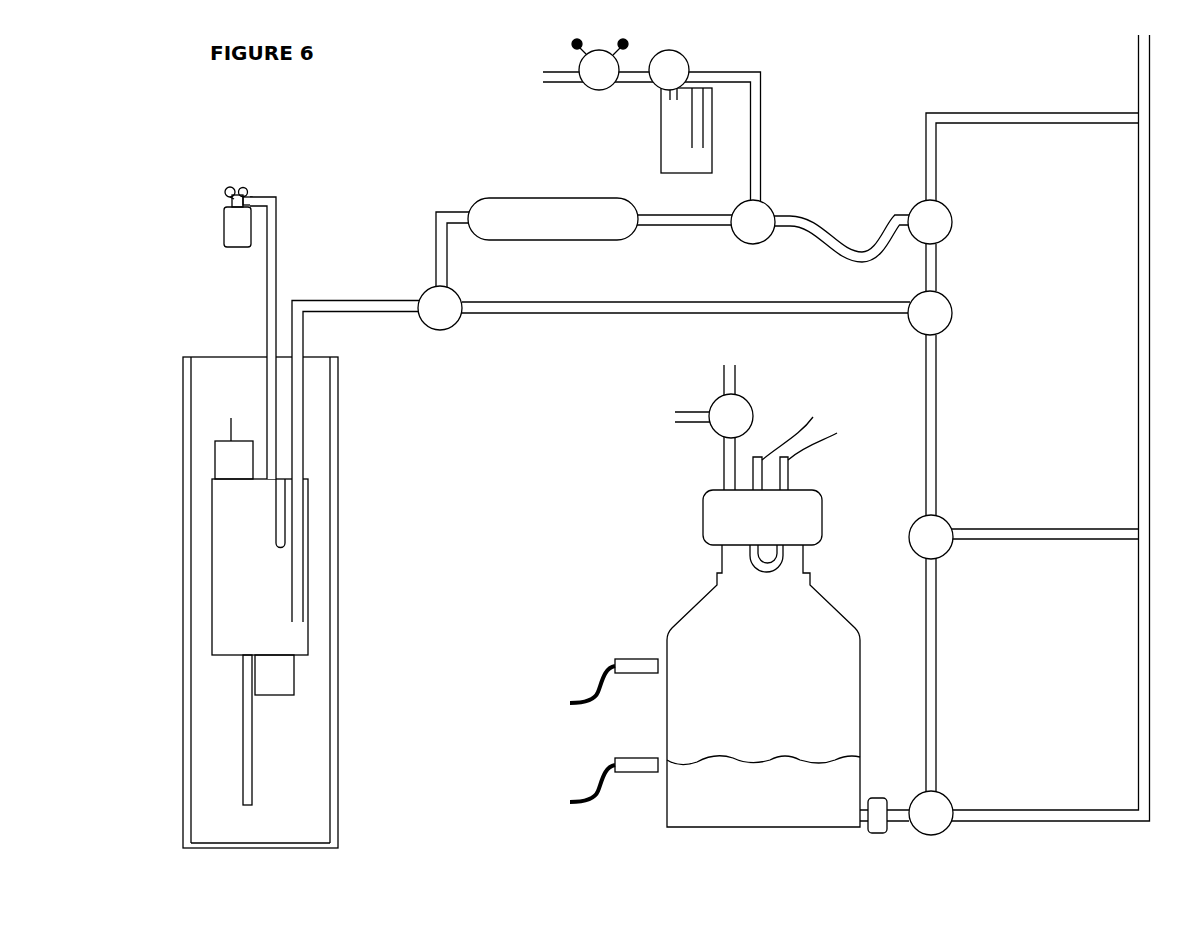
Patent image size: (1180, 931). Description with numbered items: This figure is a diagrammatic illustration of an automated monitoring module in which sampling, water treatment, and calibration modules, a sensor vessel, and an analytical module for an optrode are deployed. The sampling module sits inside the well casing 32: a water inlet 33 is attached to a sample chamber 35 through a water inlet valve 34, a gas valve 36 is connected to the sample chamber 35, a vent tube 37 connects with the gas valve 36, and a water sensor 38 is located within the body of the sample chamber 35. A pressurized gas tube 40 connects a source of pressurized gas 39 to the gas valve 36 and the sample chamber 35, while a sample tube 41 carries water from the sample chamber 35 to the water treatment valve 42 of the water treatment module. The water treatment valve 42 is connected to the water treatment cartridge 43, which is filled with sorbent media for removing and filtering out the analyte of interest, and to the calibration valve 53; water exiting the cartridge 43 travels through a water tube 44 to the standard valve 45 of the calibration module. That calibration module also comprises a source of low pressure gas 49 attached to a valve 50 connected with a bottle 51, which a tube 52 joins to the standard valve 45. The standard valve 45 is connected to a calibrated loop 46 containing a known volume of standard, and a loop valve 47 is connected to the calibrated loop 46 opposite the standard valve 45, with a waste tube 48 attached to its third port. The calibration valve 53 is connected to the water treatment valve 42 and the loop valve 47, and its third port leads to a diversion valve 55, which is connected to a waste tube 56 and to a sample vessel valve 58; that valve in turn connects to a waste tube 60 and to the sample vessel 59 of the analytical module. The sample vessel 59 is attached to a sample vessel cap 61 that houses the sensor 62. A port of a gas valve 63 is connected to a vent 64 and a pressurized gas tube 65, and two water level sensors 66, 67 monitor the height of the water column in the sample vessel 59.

The well casing 32 is at (338, 695).
The water inlet 33 is at (252, 779).
The water inlet valve 34 is at (274, 675).
The sample chamber 35 is at (260, 567).
The gas valve 36 is at (234, 460).
The vent tube 37 is at (238, 437).
The water sensor 38 is at (276, 494).
The source of pressurized gas 39 is at (238, 217).
The pressurized gas tube 40 is at (267, 343).
The sample tube 41 is at (303, 385).
The water treatment valve 42 is at (440, 308).
The water treatment cartridge 43 is at (553, 219).
The water tube 44 is at (705, 211).
The standard valve 45 is at (753, 222).
The calibrated loop 46 is at (847, 258).
The loop valve 47 is at (930, 222).
The waste tube 48 is at (1005, 109).
The source of low pressure gas 49 is at (600, 64).
The valve 50 is at (669, 70).
The bottle 51 is at (661, 153).
The tube 52 is at (769, 72).
The calibration valve 53 is at (930, 313).
The diversion valve 55 is at (931, 537).
The waste tube 56 is at (985, 541).
The sample vessel valve 58 is at (931, 813).
The sample vessel 59 is at (777, 689).
The waste tube 60 is at (1075, 821).
The sample vessel cap 61 is at (762, 531).
The sensor 62 is at (814, 491).
The gas valve 63 is at (731, 416).
The vent 64 is at (692, 428).
The pressurized gas tube 65 is at (742, 357).
The water level sensor 66 is at (627, 647).
The water level sensor 67 is at (627, 745).